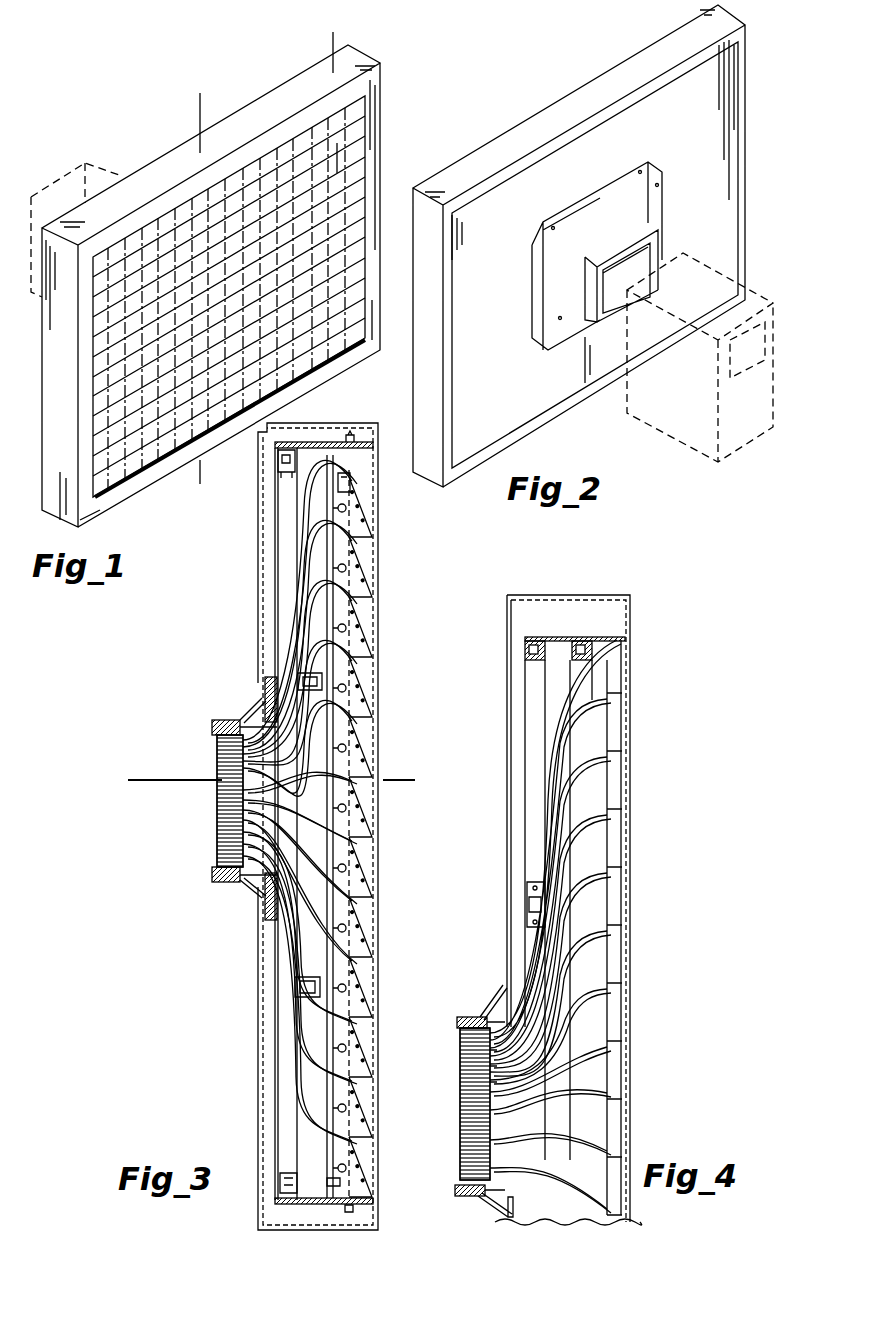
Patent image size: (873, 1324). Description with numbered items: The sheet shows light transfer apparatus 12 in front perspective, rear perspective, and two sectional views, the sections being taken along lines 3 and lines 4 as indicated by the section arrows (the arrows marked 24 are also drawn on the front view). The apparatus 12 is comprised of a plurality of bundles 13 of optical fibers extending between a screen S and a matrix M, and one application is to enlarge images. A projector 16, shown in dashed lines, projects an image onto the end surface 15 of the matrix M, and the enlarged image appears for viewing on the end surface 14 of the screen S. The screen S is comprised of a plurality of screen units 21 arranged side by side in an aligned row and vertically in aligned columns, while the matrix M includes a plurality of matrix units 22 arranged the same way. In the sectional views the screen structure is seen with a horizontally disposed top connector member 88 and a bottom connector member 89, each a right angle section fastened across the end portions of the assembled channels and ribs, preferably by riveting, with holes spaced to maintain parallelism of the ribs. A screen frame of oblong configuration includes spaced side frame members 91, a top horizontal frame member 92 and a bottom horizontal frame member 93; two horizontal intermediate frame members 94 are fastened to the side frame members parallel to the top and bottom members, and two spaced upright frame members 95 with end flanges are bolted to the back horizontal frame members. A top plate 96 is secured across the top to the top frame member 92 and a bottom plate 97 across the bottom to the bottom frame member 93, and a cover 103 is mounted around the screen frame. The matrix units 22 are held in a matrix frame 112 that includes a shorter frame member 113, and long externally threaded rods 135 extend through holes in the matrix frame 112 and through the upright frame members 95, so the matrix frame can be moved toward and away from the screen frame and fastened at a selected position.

In FIG. 1, the light transfer apparatus 12 is at (33, 476).
In FIG. 3, the bundles of optical fibers 13 is at (293, 527).
In FIG. 4, the bundles of optical fibers 13 is at (538, 758).
In FIG. 1, the end surface of the screen 14 is at (280, 196).
In FIG. 3, the end surface of the screen 14 is at (378, 617).
In FIG. 4, the end surface of the screen 14 is at (635, 837).
In FIG. 2, the end surface of the matrix 15 is at (645, 260).
In FIG. 3, the end surface of the matrix 15 is at (215, 833).
In FIG. 4, the end surface of the matrix 15 is at (455, 1118).
In FIG. 1, the projector 16 is at (86, 160).
In FIG. 2, the projector 16 is at (670, 402).
In FIG. 1, the screen units 21 is at (143, 237).
In FIG. 3, the screen units 21 is at (372, 683).
In FIG. 4, the screen units 21 is at (623, 665).
In FIG. 4, the matrix units 22 is at (462, 1060).
In FIG. 1, the section line 24 is at (327, 43).
In FIG. 1, the section line 3- 3 is at (192, 108).
In FIG. 3, the section line 4- 4 is at (133, 760).
In FIG. 3, the top connector member 88 is at (335, 474).
In FIG. 3, the bottom connector member 89 is at (333, 1180).
In FIG. 4, the side frame members 91 is at (575, 640).
In FIG. 3, the top horizontal frame member 92 is at (277, 465).
In FIG. 3, the bottom horizontal frame member 93 is at (262, 1158).
In FIG. 3, the horizontal intermediate frame members 94 is at (307, 676).
In FIG. 4, the upright frame members 95 is at (527, 902).
In FIG. 3, the top plate 96 is at (312, 442).
In FIG. 3, the bottom plate 97 is at (267, 1207).
In FIG. 1, the cover 103 is at (158, 482).
In FIG. 3, the cover 103 is at (397, 388).
In FIG. 3, the matrix frame 112 is at (212, 727).
In FIG. 4, the shorter frame member 113 is at (460, 1193).
In FIG. 3, the long externally threaded rods 135 is at (248, 712).
In FIG. 4, the long externally threaded rods 135 is at (495, 1012).
In FIG. 1, the screen S is at (385, 96).
In FIG. 2, the screen S is at (563, 91).
In FIG. 3, the screen S is at (380, 548).
In FIG. 2, the matrix M is at (618, 284).
In FIG. 3, the matrix M is at (215, 855).